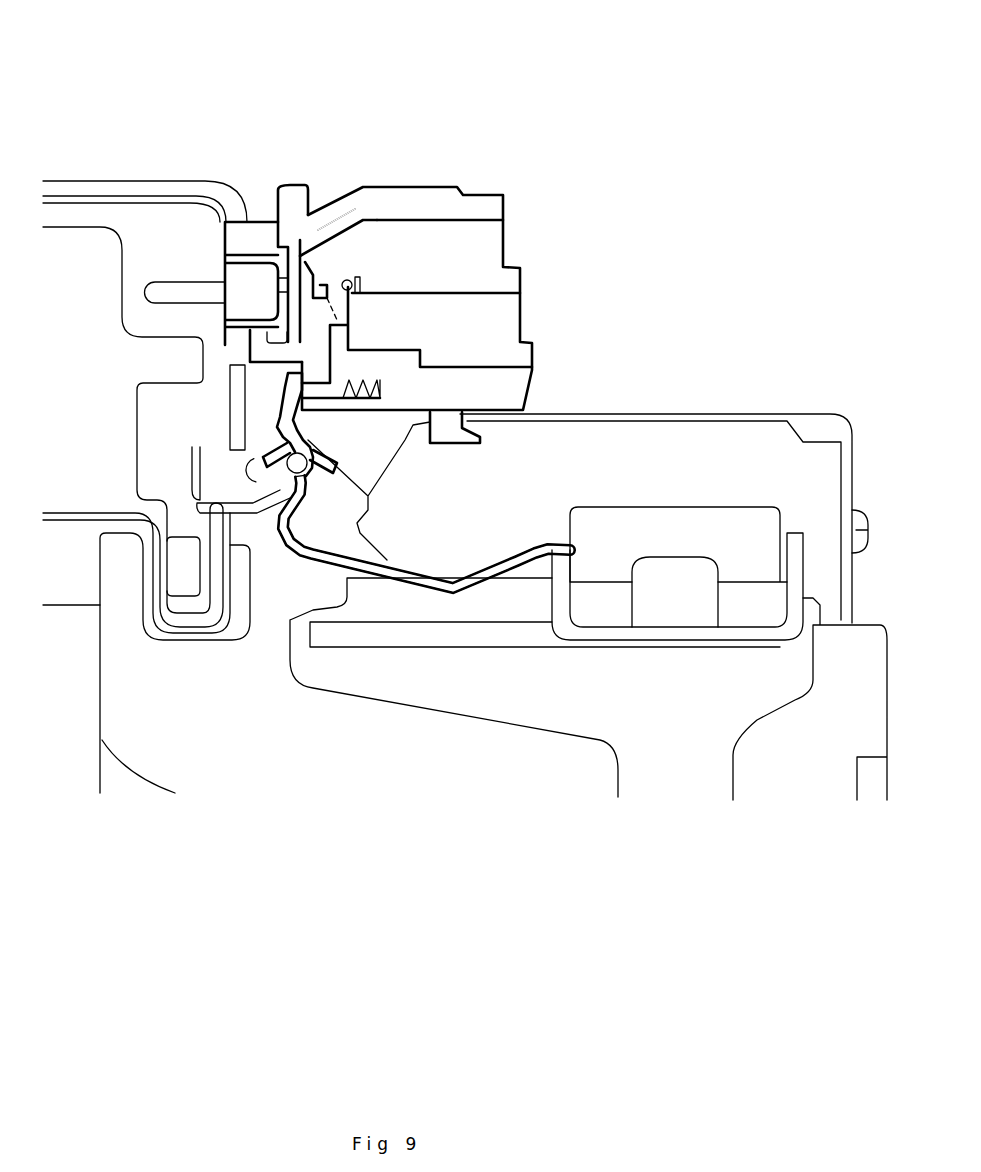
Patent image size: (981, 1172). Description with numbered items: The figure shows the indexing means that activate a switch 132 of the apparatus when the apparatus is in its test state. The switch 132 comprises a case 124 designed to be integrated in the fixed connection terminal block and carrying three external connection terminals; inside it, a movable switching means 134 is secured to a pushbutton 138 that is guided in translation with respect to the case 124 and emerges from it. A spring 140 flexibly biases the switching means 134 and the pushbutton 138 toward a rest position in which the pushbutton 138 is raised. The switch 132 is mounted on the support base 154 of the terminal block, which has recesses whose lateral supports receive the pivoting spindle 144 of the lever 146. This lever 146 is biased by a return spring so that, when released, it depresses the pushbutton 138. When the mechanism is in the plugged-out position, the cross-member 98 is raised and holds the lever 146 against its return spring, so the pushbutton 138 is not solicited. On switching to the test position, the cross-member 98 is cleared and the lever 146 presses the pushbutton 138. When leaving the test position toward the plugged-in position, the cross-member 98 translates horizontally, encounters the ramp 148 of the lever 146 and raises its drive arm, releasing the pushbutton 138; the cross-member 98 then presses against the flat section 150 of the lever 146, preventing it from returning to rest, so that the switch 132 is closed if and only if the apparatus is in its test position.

The cross-member 98 is at (667, 630).
The case 124 is at (413, 203).
The switch 132 is at (598, 230).
The movable switching means 134 is at (348, 307).
The pushbutton 138 is at (323, 387).
The spring 140 is at (383, 392).
The pivoting spindle 144 is at (290, 470).
The lever 146 is at (283, 545).
The ramp 148 is at (500, 578).
The flat section 150 is at (400, 578).
The support base 154 is at (250, 258).